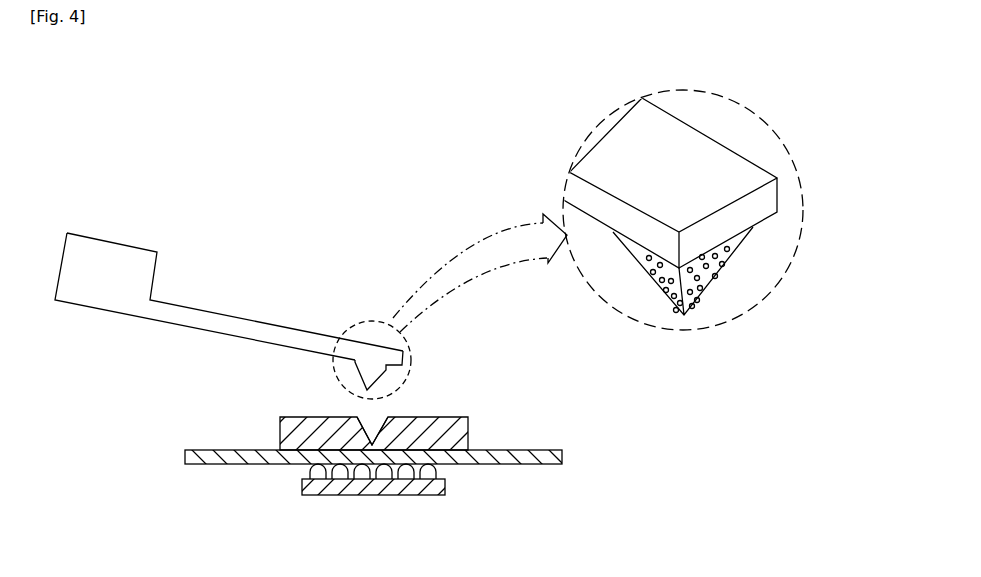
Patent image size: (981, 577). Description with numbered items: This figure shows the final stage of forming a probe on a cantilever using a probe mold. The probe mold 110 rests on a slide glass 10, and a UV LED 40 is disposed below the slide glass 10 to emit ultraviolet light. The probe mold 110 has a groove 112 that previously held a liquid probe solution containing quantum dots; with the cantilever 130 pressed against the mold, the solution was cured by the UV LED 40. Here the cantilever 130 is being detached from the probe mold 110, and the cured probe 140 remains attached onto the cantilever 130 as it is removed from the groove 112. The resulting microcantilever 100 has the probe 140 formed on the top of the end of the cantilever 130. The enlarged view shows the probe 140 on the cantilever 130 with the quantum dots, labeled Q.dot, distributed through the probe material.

The microcantilever 100 is at (419, 222).
The cantilever 130 is at (290, 328).
The probe 140 is at (384, 375).
The groove 112 is at (386, 428).
The probe mold 110 is at (468, 432).
The slide glass 10 is at (562, 456).
The UV LED 40 is at (436, 473).
The quantum dots Q.dot is at (707, 280).